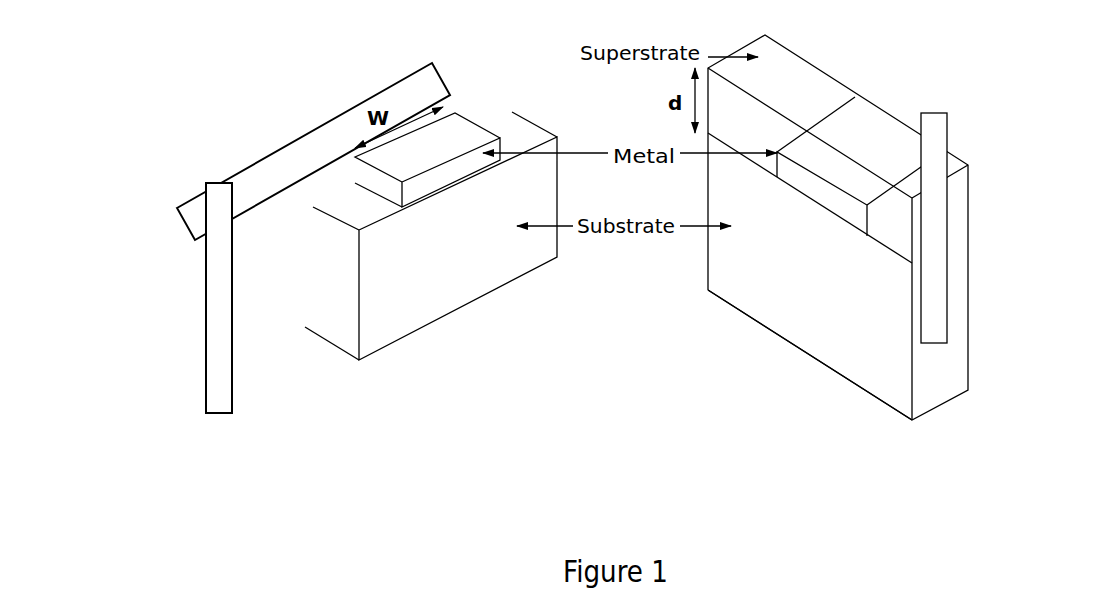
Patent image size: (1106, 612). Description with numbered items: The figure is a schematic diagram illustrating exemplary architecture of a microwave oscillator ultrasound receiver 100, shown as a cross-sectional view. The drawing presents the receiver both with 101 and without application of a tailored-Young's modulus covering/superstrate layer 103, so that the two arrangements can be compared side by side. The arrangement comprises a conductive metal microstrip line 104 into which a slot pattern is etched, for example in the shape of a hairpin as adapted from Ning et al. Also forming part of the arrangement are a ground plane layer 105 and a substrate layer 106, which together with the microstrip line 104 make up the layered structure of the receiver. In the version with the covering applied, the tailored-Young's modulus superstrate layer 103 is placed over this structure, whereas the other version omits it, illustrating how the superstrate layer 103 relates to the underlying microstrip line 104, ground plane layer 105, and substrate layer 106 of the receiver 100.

The microwave oscillator ultrasound receiver 100 is at (893, 244).
The receiver with application of superstrate layer 101 is at (977, 280).
The tailored-Young's modulus covering/superstrate layer 103 is at (877, 135).
The conductive metal microstrip line 104 is at (342, 110).
The ground plane layer 105 is at (825, 332).
The substrate layer 106 is at (390, 297).